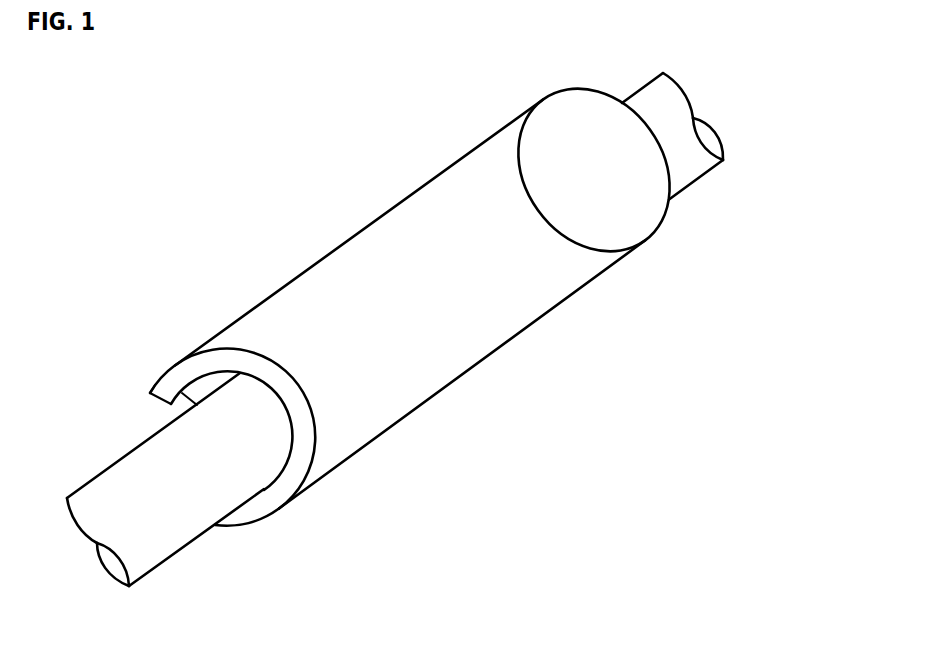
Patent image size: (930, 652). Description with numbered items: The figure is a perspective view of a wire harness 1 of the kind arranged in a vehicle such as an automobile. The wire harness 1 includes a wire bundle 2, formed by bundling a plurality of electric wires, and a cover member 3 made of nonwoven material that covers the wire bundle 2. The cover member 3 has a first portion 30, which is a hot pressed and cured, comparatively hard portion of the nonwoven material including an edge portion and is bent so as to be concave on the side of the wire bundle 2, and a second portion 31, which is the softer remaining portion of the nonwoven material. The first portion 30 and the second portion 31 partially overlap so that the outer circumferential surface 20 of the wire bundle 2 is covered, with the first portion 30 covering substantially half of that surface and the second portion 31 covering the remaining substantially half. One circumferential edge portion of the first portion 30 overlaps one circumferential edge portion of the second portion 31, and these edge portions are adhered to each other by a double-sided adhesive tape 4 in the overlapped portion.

The wire harness 1 is at (395, 139).
The wire bundle 2 is at (173, 508).
The outer circumferential surface 20 is at (145, 562).
The cover member 3 is at (303, 268).
The first portion 30 is at (257, 517).
The second portion 31 is at (433, 382).
The double-sided adhesive tape 4 is at (148, 388).